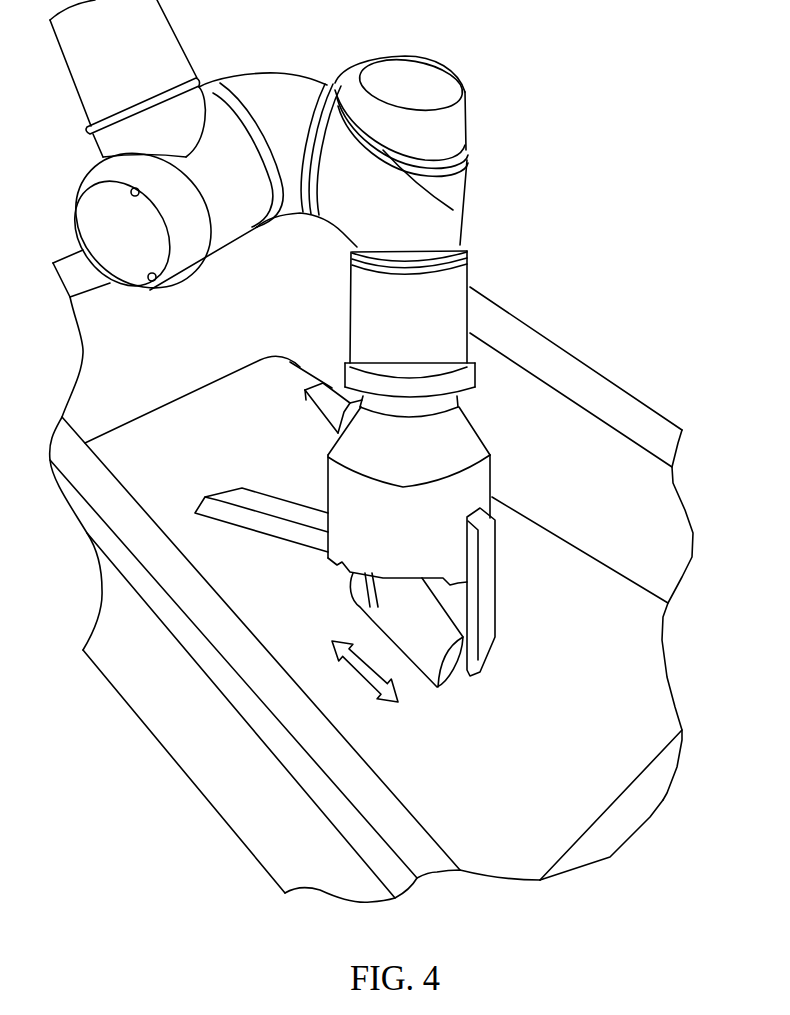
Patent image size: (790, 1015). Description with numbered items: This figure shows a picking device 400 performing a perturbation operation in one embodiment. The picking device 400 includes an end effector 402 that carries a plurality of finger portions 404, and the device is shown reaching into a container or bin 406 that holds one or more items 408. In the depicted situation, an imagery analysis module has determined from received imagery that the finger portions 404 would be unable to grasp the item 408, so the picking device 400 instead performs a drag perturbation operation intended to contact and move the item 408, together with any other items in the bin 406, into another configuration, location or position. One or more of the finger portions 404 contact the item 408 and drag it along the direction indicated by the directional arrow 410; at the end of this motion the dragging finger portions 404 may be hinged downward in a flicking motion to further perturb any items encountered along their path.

The picking device 400 is at (505, 168).
The end effector 402 is at (429, 540).
The finger portions 404 is at (335, 435).
The container or bin 406 is at (591, 684).
The item 408 is at (441, 626).
The directional arrow 410 is at (399, 705).